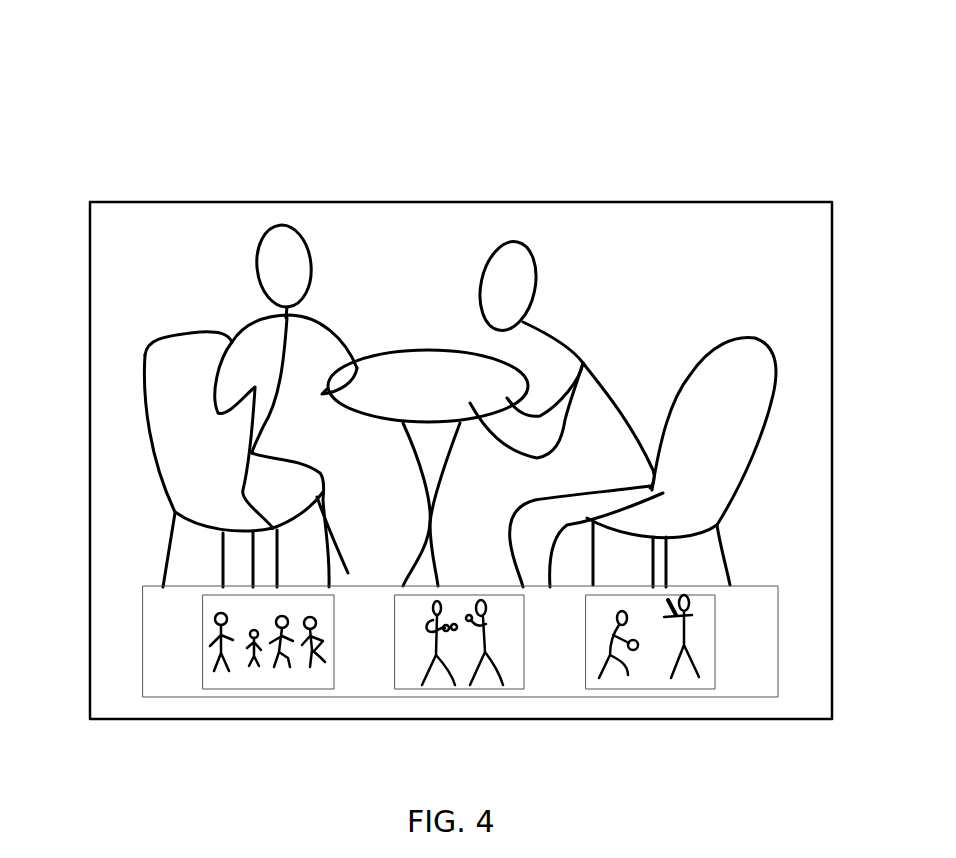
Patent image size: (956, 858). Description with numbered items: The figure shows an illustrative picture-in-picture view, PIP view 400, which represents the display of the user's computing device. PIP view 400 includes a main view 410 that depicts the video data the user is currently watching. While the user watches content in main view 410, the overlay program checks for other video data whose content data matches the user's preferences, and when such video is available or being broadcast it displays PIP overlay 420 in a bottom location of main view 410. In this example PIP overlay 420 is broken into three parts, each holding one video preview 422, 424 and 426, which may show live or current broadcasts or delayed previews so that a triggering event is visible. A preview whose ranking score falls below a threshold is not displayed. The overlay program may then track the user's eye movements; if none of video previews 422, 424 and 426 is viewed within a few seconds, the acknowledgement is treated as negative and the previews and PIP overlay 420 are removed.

The PIP view 400 is at (695, 118).
The main view 410 is at (313, 220).
The PIP overlay 420 is at (143, 642).
The video preview 422 is at (268, 689).
The video preview 424 is at (460, 689).
The video preview 426 is at (651, 689).